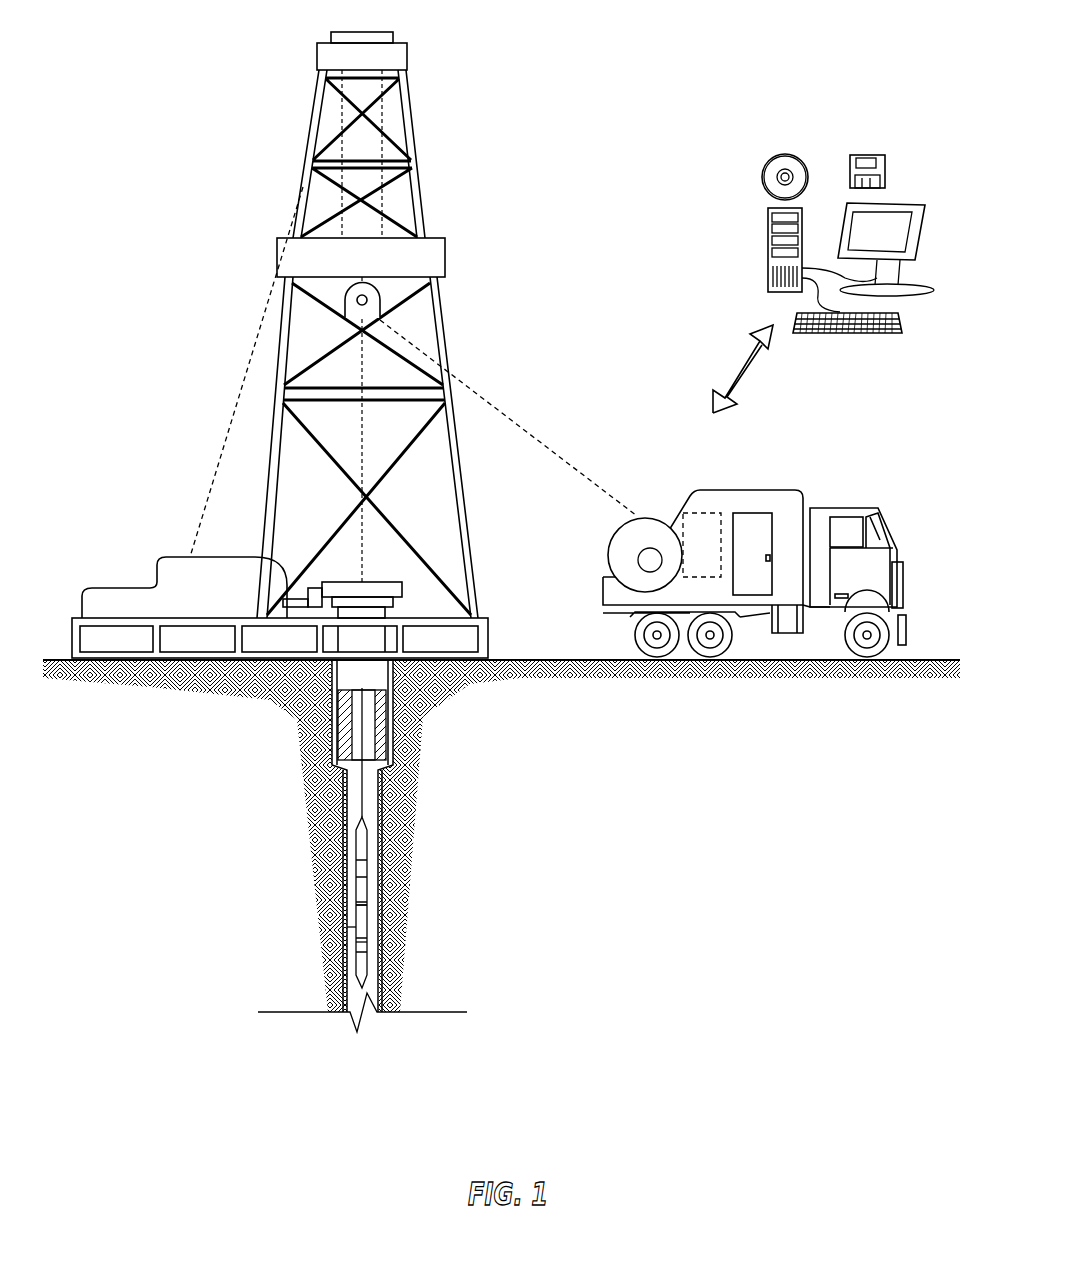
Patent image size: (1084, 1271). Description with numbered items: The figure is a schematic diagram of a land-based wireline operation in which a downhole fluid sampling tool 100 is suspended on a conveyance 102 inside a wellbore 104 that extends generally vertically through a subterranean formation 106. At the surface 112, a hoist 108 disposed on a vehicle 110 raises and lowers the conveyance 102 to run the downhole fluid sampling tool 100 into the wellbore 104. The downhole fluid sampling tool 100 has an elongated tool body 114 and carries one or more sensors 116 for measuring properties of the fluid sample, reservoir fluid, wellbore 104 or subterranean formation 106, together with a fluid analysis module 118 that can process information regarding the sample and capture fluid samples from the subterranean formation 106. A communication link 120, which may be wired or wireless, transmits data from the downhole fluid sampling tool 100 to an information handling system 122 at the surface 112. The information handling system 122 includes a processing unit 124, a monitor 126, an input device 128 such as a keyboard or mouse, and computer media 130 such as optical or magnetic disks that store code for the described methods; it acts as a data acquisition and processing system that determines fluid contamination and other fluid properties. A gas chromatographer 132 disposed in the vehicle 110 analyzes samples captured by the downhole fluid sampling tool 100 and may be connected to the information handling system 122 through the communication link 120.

The downhole fluid sampling tool 100 is at (368, 907).
The conveyance 102 is at (360, 785).
The wellbore 104 is at (340, 840).
The subterranean formation 106 is at (568, 847).
The hoist 108 is at (609, 545).
The vehicle 110 is at (719, 549).
The surface 112 is at (918, 660).
The tool body 114 is at (356, 927).
The sensors 116 is at (368, 942).
The fluid analysis module 118 is at (355, 905).
The communication link 120 is at (752, 373).
The information handling system 122 is at (782, 253).
The processing unit 124 is at (768, 222).
The monitor 126 is at (902, 202).
The input device 128 is at (890, 335).
The computer media 130 is at (870, 153).
The gas chromatographer 132 is at (703, 513).